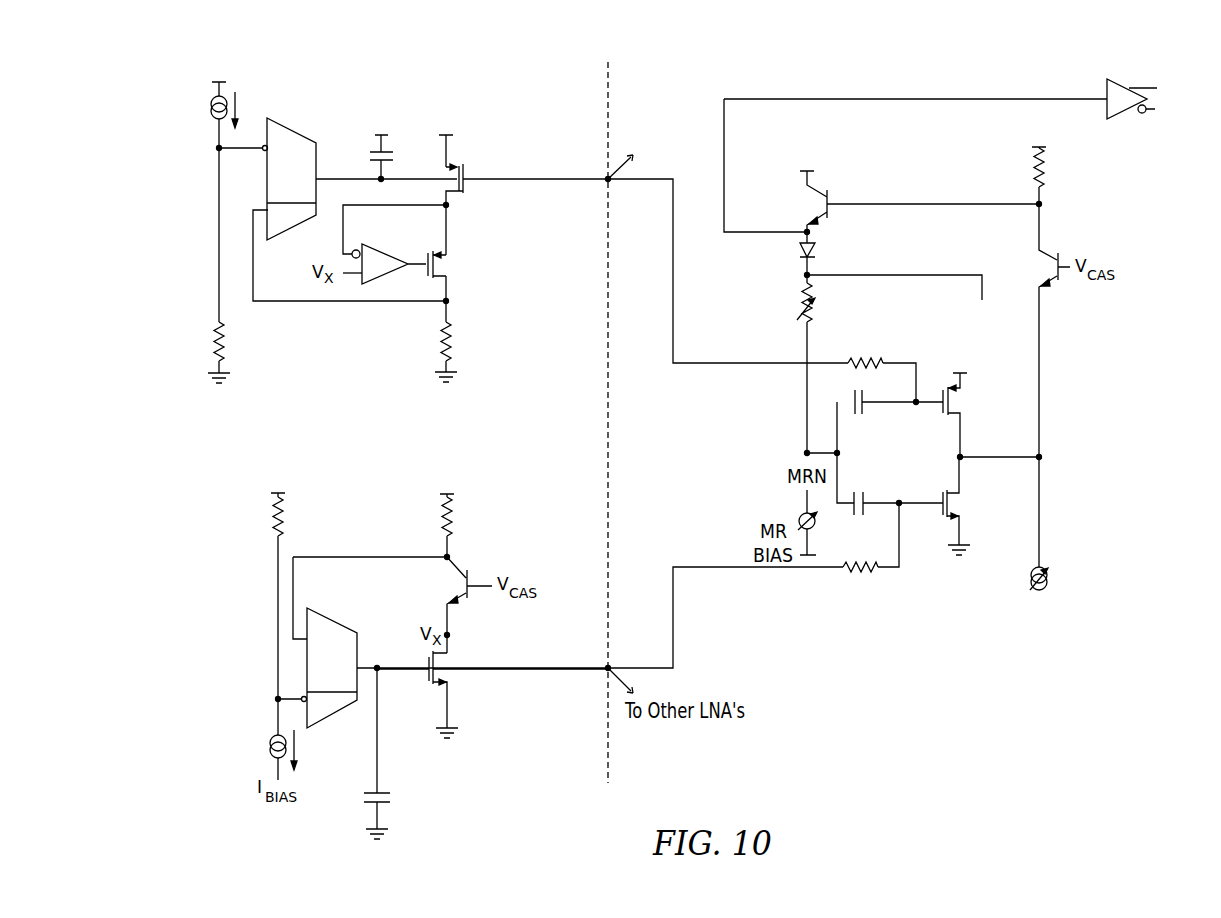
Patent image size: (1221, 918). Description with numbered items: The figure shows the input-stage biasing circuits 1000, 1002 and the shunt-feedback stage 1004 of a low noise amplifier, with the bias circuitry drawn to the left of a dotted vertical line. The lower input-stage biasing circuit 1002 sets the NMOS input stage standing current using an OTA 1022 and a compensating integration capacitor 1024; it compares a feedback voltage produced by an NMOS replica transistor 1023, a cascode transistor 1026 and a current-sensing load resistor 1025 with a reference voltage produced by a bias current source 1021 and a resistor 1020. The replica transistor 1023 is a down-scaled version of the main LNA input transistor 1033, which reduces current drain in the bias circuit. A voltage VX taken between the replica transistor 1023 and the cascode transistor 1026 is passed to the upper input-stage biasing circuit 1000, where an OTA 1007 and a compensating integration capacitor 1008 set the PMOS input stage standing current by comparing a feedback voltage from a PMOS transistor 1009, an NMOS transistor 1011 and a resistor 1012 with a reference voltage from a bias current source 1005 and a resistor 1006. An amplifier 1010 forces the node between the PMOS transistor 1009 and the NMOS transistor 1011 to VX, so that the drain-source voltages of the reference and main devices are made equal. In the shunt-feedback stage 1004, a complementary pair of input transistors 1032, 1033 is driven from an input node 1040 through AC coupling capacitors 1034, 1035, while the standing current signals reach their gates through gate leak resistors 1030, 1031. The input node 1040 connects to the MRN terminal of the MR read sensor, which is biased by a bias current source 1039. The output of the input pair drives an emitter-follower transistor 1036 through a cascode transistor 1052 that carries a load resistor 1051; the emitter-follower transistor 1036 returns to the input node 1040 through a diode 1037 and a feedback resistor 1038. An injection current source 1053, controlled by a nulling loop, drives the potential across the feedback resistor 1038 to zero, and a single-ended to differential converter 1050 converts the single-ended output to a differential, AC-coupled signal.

The upper input-stage biasing circuit 1000 is at (305, 72).
The lower input-stage biasing circuit 1002 is at (237, 497).
The shunt-feedback stage 1004 is at (1057, 702).
The bias current source 1005 is at (212, 113).
The resistor 1006 is at (223, 343).
The OTA 1007 is at (291, 179).
The compensating integration capacitor 1008 is at (370, 150).
The PMOS transistor 1009 is at (468, 166).
The amplifier 1010 is at (378, 242).
The NMOS transistor 1011 is at (448, 278).
The resistor 1012 is at (449, 342).
The resistor 1020 is at (282, 522).
The bias current source 1021 is at (270, 752).
The OTA 1022 is at (332, 668).
The NMOS replica transistor 1023 is at (445, 694).
The compensating integration capacitor 1024 is at (371, 792).
The current-sensing load resistor 1025 is at (449, 520).
The cascode transistor 1026 is at (449, 608).
The gate leak resistor 1030 is at (876, 357).
The gate leak resistor 1031 is at (862, 572).
The input transistor 1032 is at (961, 380).
The main LNA input transistor 1033 is at (961, 483).
The AC coupling capacitor 1034 is at (864, 413).
The AC coupling capacitor 1035 is at (867, 497).
The emitter-follower transistor 1036 is at (805, 187).
The diode 1037 is at (803, 258).
The feedback resistor 1038 is at (810, 318).
The bias current source 1039 is at (800, 517).
The input node 1040 is at (806, 414).
The single-ended to differential converter 1050 is at (1123, 78).
The load resistor 1051 is at (1043, 174).
The cascode transistor 1052 is at (1042, 288).
The injection current source 1053 is at (1068, 595).